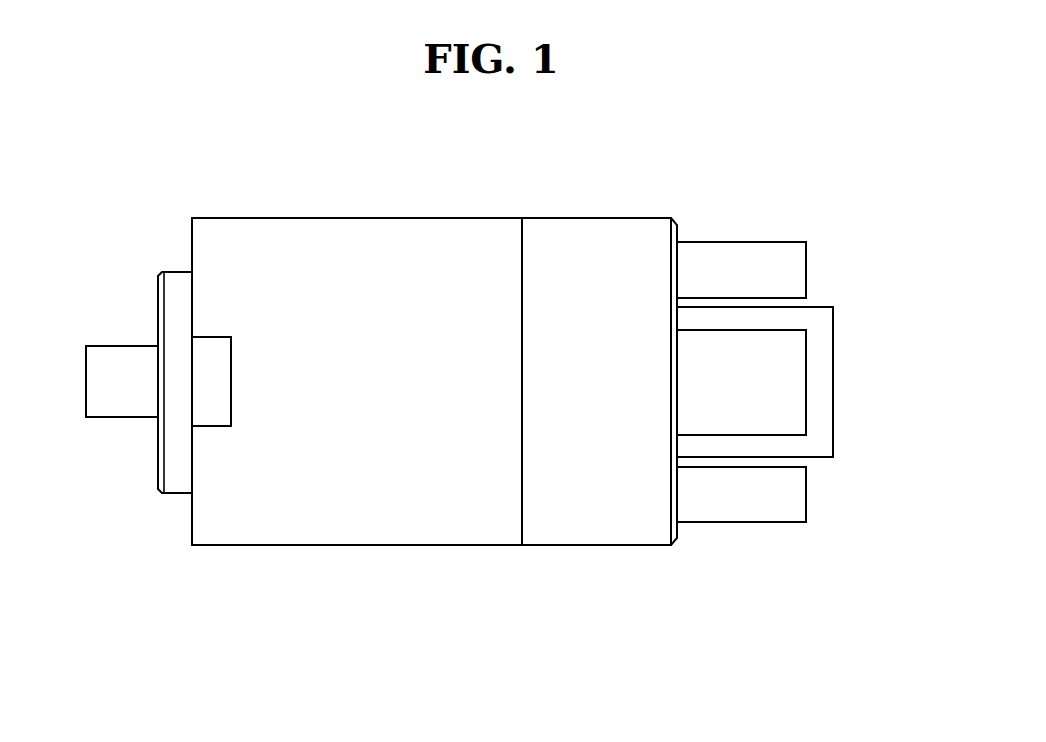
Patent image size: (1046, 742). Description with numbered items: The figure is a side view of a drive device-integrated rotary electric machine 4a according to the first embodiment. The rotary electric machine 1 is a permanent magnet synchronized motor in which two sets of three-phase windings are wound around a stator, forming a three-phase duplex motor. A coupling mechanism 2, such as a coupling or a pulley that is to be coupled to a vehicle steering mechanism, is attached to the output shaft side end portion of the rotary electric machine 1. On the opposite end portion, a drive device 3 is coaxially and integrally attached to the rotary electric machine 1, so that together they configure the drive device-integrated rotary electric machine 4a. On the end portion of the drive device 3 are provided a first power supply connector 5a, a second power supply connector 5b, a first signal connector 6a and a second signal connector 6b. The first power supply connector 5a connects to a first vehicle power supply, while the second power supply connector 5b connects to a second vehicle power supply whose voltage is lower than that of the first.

The rotary electric machine 1 is at (388, 547).
The coupling mechanism 2 is at (121, 420).
The drive device 3 is at (608, 556).
The drive device-integrated rotary electric machine 4a is at (550, 696).
The first power supply connector 5a is at (806, 360).
The second power supply connector 5b is at (833, 390).
The first signal connector 6a is at (764, 242).
The second signal connector 6b is at (746, 523).